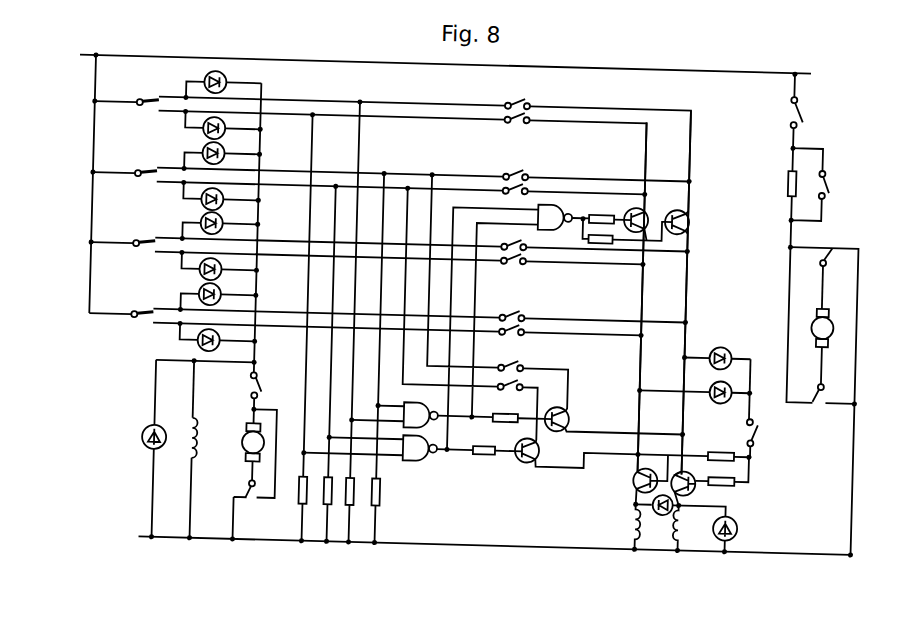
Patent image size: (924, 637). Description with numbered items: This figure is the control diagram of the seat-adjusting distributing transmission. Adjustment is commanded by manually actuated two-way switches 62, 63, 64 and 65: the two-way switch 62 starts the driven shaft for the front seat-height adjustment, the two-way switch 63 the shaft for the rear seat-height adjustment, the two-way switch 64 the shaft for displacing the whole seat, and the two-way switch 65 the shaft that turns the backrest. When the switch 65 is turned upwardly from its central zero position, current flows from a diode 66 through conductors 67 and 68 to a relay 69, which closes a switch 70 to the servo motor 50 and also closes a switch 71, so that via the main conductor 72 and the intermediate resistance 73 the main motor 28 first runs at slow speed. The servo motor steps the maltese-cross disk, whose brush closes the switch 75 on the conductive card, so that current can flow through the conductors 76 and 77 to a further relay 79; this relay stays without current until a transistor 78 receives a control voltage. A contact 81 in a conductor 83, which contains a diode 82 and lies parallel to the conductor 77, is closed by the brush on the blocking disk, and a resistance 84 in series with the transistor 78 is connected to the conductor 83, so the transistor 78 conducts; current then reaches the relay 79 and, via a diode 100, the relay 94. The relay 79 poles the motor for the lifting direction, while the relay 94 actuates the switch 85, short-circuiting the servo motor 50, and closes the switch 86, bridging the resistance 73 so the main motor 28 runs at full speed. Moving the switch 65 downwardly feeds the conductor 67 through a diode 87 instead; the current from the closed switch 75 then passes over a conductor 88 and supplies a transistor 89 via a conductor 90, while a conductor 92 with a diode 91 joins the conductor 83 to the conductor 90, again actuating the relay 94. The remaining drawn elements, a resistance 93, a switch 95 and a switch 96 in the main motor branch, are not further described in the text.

The main motor 28 is at (849, 308).
The servo motor 50 is at (253, 449).
The two-way switch 62 is at (137, 100).
The two-way switch 63 is at (138, 171).
The two-way switch 64 is at (140, 242).
The two-way switch 65 is at (142, 312).
The diode 66 is at (207, 288).
The conductor 67 is at (270, 356).
The conductor 68 is at (198, 371).
The relay 69 is at (198, 426).
The switch 70 is at (272, 384).
The switch 71 is at (804, 94).
The main conductor 72 is at (791, 244).
The intermediate resistance 73 is at (791, 167).
The switch 75 is at (516, 161).
The conductor 76 is at (626, 306).
The conductor 77 is at (695, 309).
The transistor 78 is at (708, 477).
The relay 79 is at (688, 522).
The contact 81 is at (766, 424).
The diode 82 is at (735, 333).
The conductor 83 is at (761, 363).
The resistance 84 is at (760, 466).
The switch 85 is at (258, 495).
The switch 86 is at (831, 162).
The diode 87 is at (206, 339).
The conductor 88 is at (639, 325).
The transistor 89 is at (644, 470).
The conductor 90 is at (646, 382).
The diode 91 is at (721, 382).
The conductor 92 is at (677, 378).
The resistor 93 is at (733, 437).
The relay 94 is at (644, 512).
The switch 95 is at (835, 244).
The switch 96 is at (836, 368).
The diode 100 is at (668, 500).